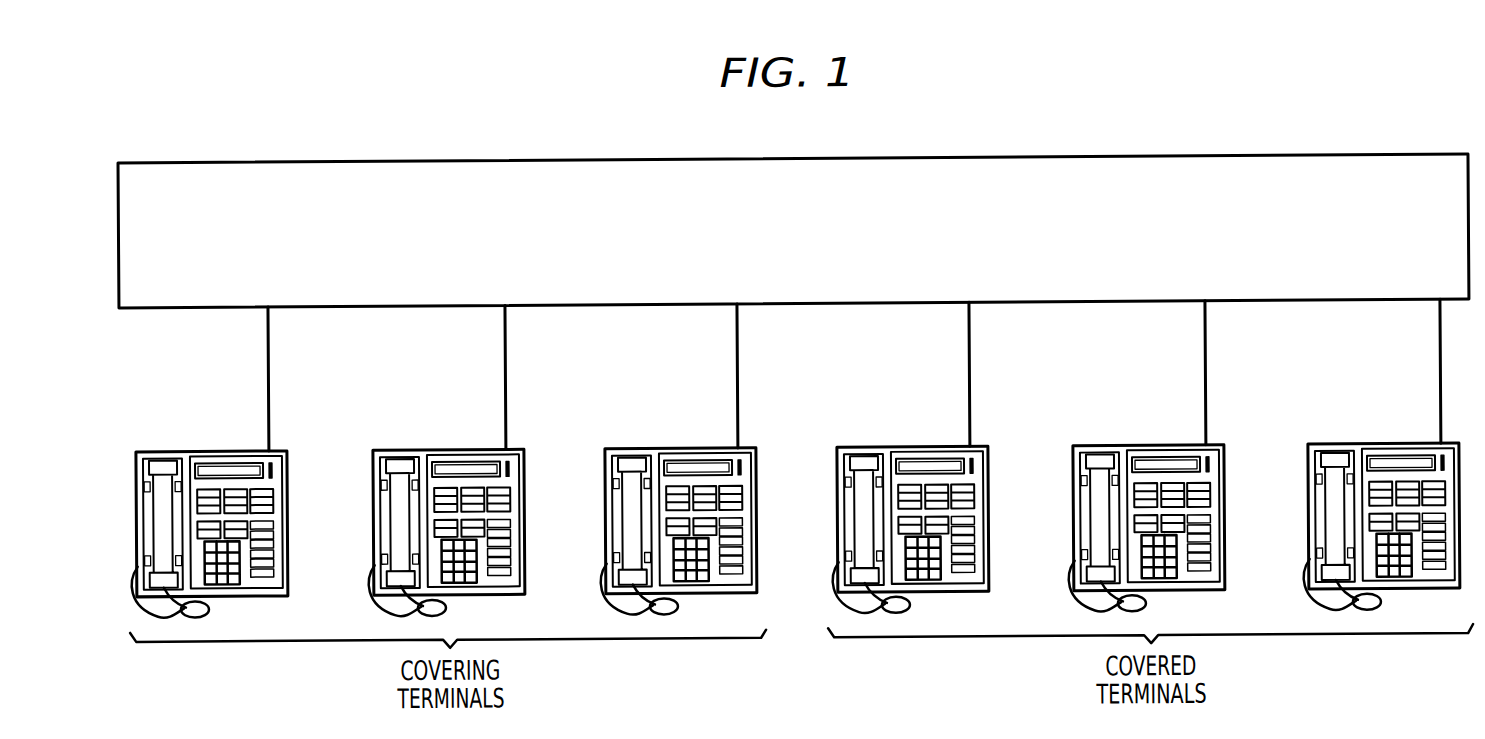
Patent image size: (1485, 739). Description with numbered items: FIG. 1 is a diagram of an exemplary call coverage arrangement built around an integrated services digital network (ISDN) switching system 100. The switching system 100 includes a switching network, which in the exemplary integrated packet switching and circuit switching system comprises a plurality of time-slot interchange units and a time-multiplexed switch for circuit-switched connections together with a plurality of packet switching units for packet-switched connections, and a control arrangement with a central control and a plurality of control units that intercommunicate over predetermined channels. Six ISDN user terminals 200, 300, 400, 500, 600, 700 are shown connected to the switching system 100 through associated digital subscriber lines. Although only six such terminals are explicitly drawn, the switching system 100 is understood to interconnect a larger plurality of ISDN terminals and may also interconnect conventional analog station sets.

The ISDN switching system 100 is at (790, 169).
The ISDN user terminal 200 is at (162, 452).
The ISDN user terminal 300 is at (399, 452).
The ISDN user terminal 400 is at (631, 452).
The ISDN user terminal 500 is at (863, 452).
The ISDN user terminal 600 is at (1099, 452).
The ISDN user terminal 700 is at (1334, 452).